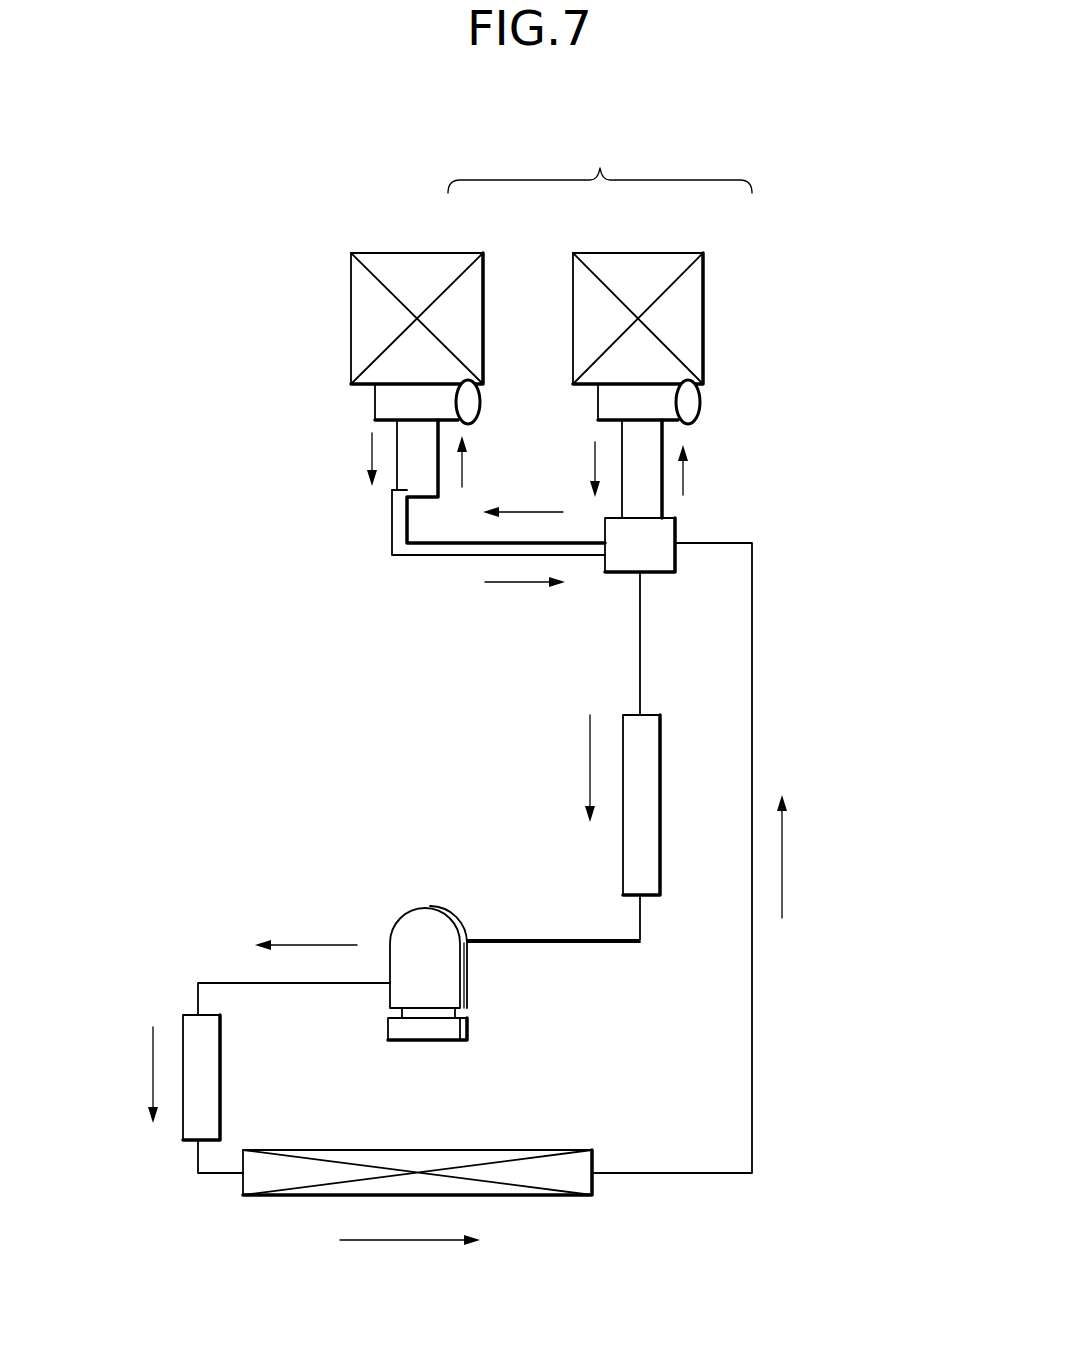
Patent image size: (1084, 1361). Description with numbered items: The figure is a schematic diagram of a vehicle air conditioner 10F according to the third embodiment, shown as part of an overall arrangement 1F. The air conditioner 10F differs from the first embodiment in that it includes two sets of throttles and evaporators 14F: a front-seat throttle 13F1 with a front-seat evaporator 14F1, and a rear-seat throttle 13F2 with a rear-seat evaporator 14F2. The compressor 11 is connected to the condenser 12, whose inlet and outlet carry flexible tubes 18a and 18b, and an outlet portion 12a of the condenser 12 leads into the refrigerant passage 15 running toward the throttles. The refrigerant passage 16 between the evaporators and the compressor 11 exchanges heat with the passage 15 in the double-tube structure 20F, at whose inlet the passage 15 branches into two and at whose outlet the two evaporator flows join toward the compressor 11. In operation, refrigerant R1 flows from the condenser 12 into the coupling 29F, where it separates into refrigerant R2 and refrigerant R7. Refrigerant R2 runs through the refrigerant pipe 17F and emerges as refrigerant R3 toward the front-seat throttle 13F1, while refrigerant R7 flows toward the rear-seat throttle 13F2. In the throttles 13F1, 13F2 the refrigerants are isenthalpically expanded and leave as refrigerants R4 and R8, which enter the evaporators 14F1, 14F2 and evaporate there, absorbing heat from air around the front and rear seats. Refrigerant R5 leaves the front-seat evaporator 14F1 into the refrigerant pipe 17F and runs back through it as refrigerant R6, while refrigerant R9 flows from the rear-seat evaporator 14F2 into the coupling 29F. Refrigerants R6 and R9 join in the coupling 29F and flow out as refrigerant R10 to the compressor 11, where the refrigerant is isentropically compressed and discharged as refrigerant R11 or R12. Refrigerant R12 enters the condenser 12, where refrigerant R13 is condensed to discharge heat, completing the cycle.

The refrigeration cycle apparatus 1F is at (788, 204).
The vehicle air conditioner 10F is at (813, 453).
The evaporators 14F is at (600, 162).
The front-seat evaporator 14F1 is at (430, 253).
The rear-seat evaporator 14F2 is at (643, 253).
The front-seat throttle 13F1 is at (481, 402).
The rear-seat throttle 13F2 is at (702, 398).
The double-tube structure 20F is at (432, 557).
The refrigerant pipe 17F is at (374, 573).
The coupling 29F is at (675, 530).
The refrigerant passage 15 is at (752, 647).
The flexible tube 18a is at (660, 760).
The flexible tube 18b is at (220, 1073).
The refrigerant passage 16 is at (558, 932).
The compressor 11 is at (395, 928).
The condenser 12 is at (547, 1196).
The outlet pipe of outdoor heat exchanger 12a is at (594, 1183).
The refrigerant R1 is at (802, 856).
The refrigerant R2 is at (523, 498).
The refrigerant R3 is at (480, 461).
The refrigerant R4 is at (480, 389).
The refrigerant R5 is at (351, 459).
The refrigerant R6 is at (525, 597).
The refrigerant R7 is at (705, 470).
The refrigerant R8 is at (702, 389).
The refrigerant R9 is at (575, 469).
The refrigerant R10 is at (562, 768).
The refrigerant R11 is at (306, 930).
The refrigerant R12 is at (123, 1075).
The refrigerant R13 is at (410, 1257).